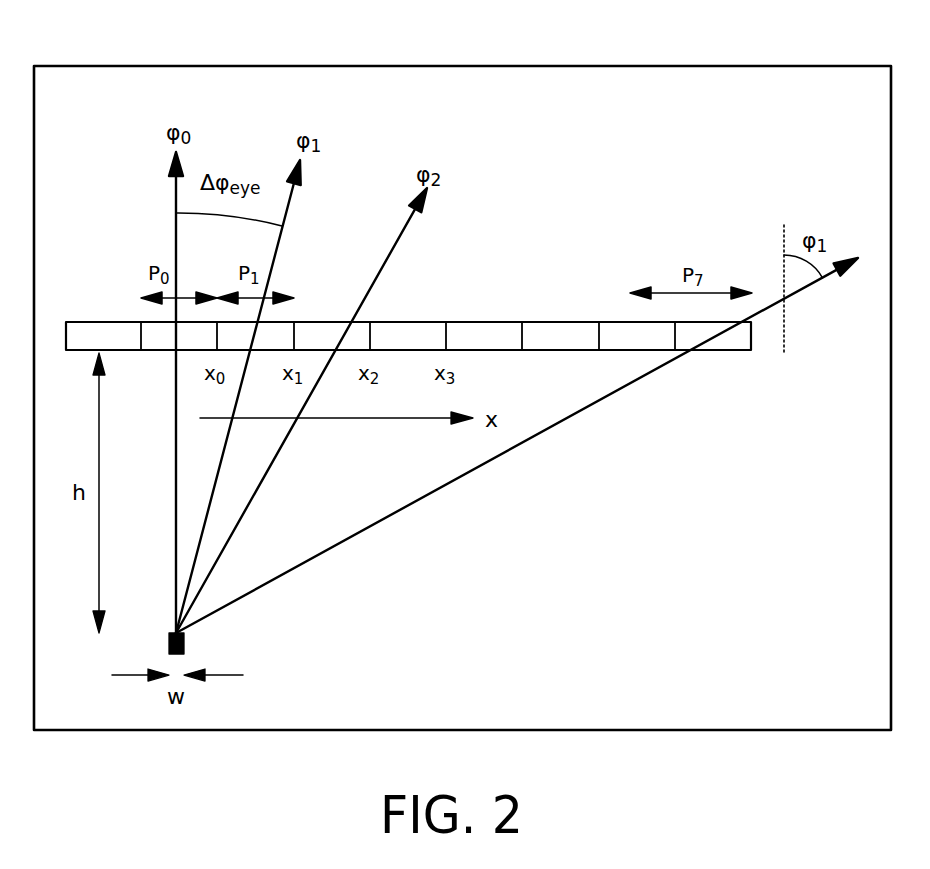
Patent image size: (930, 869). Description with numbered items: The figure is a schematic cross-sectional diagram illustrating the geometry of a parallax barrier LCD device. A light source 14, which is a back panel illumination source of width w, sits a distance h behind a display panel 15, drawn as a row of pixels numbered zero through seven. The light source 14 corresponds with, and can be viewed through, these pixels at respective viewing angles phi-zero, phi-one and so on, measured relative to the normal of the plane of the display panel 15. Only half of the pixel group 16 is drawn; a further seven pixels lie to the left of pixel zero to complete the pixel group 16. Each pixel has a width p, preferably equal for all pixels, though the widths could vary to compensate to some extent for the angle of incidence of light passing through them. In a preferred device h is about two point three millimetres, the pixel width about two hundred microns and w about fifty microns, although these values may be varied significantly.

The light source 14 is at (185, 644).
The display panel 15 is at (735, 352).
The pixel group 16 is at (512, 66).